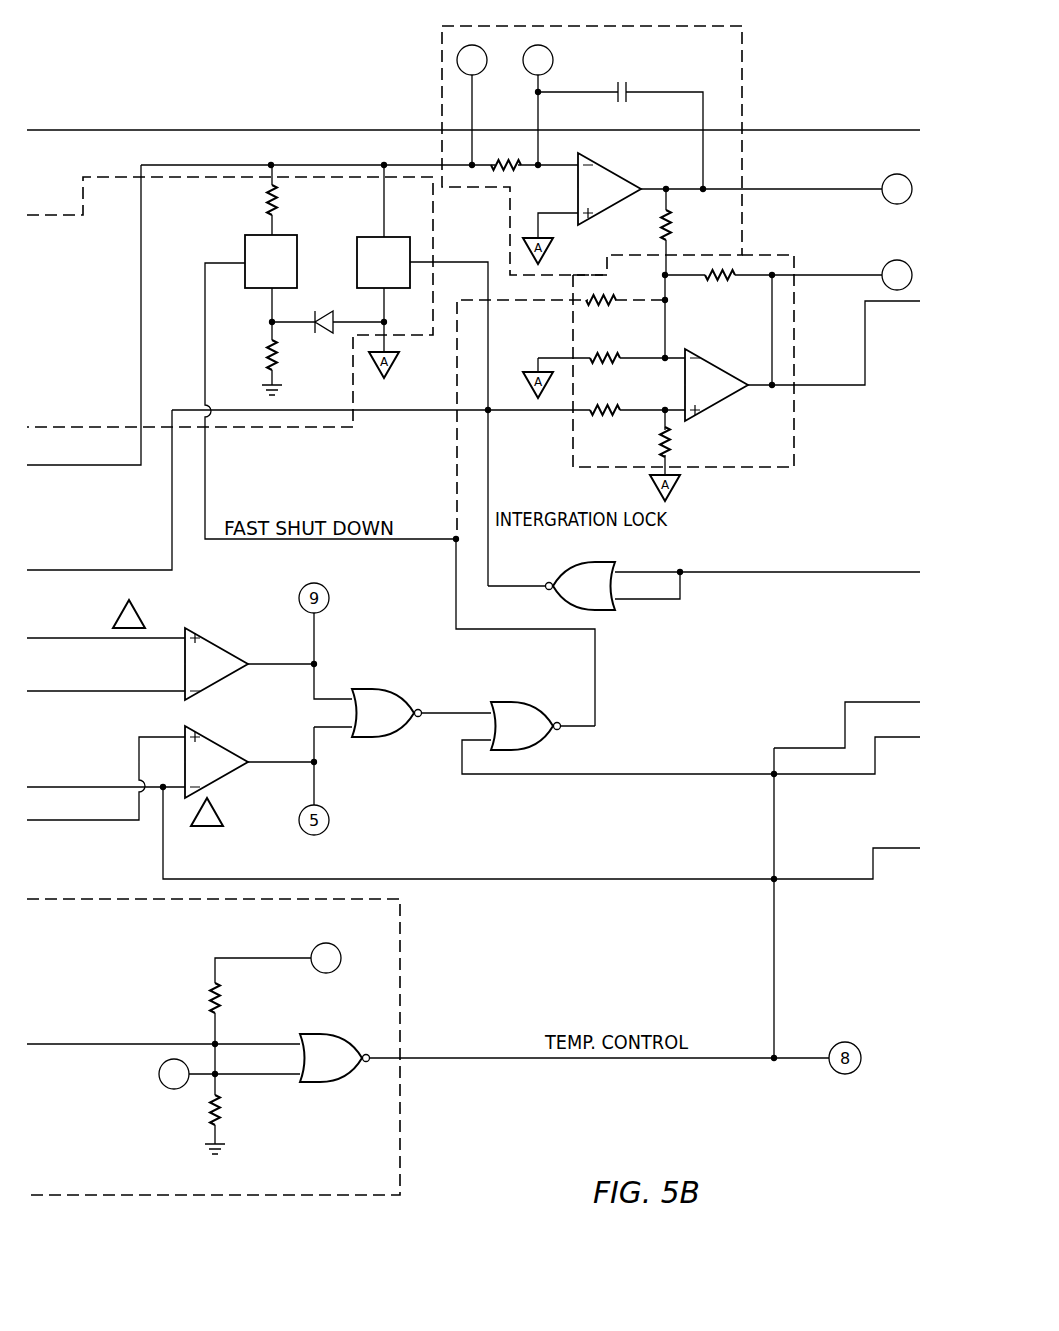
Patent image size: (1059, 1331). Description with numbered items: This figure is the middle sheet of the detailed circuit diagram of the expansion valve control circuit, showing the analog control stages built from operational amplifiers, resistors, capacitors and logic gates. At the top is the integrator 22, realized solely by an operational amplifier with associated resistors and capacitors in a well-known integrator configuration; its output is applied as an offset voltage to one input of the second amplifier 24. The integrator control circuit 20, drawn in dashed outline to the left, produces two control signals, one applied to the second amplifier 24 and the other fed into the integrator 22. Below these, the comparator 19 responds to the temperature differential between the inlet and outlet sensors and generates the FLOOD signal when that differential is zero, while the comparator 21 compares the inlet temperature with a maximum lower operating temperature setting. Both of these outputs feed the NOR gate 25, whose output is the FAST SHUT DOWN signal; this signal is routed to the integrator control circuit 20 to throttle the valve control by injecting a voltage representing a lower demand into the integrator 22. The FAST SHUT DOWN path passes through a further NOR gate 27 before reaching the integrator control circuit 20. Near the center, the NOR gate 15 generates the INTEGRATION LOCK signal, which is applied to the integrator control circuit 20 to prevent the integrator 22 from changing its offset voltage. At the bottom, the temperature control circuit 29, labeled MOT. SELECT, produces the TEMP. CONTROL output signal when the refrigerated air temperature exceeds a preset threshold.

The integrator 22 is at (744, 50).
The integrator control circuit 20 is at (325, 430).
The second amplifier 24 is at (795, 442).
The NOR gate 15 is at (597, 566).
The comparator 19 is at (188, 633).
The comparator 21 is at (208, 738).
The NOR gate 25 is at (392, 688).
The NOR gate U6 27 is at (531, 704).
The temperature control circuit 29 is at (401, 1153).